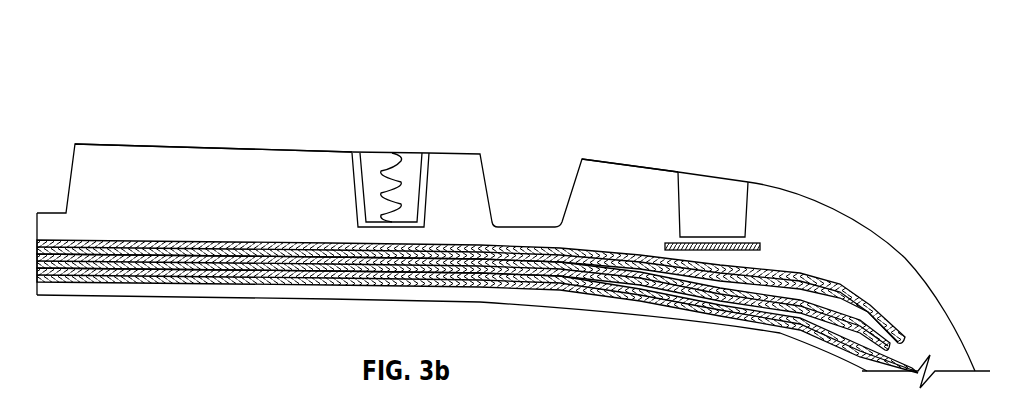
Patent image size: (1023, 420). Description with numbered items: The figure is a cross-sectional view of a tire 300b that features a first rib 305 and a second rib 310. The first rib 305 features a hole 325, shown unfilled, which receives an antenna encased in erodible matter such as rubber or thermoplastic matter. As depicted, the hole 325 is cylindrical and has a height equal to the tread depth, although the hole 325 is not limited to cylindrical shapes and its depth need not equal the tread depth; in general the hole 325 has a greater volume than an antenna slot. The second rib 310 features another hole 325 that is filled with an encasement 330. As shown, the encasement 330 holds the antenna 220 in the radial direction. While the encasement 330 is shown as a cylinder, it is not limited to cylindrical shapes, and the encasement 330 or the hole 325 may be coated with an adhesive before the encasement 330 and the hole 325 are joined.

The tire 300b is at (152, 60).
The second rib 310 is at (92, 150).
The encasement 330 is at (367, 158).
The hole 325 is at (425, 155).
The antenna 220 is at (392, 152).
The first rib 305 is at (603, 168).